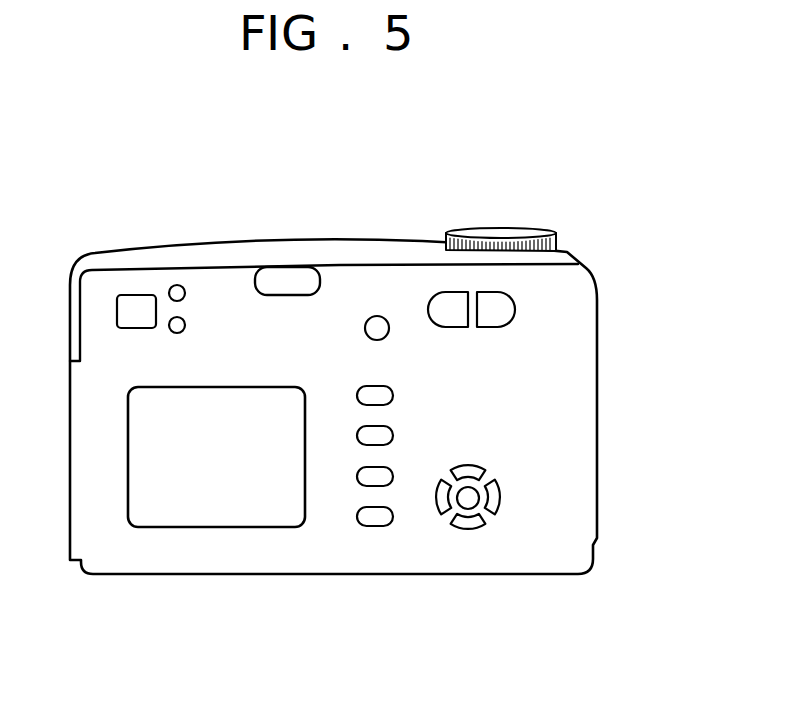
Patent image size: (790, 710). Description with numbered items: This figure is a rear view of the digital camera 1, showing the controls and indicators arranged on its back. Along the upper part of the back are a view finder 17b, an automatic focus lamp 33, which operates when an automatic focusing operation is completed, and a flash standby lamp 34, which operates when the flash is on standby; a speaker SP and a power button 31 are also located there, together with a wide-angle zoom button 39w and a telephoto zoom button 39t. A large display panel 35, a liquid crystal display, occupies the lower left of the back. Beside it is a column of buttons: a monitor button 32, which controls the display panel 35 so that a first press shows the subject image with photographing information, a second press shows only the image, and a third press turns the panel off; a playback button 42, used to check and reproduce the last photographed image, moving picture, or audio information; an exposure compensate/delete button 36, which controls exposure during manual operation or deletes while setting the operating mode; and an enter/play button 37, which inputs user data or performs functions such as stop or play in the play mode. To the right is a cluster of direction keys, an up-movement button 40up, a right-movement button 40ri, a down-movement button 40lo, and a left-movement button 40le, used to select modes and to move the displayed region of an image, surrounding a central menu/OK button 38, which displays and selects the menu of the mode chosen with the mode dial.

The digital camera 1 is at (566, 170).
The view finder 17b is at (135, 305).
The automatic focus lamp 33 is at (177, 288).
The flash standby lamp 34 is at (168, 328).
The speaker SP is at (285, 275).
The power button 31 is at (378, 326).
The wide-angle zoom button 39w is at (447, 303).
The telephoto zoom button 39t is at (497, 303).
The monitor button 32 is at (393, 395).
The playback button 42 is at (393, 436).
The exposure compensate/delete button 36 is at (362, 480).
The enter/play button 37 is at (376, 523).
The display panel 35 is at (218, 508).
The up-movement button 40up is at (480, 467).
The right-movement button 40ri is at (500, 494).
The left-movement button 40le is at (441, 507).
The down-movement button 40lo is at (470, 525).
The menu/OK button 38 is at (468, 498).